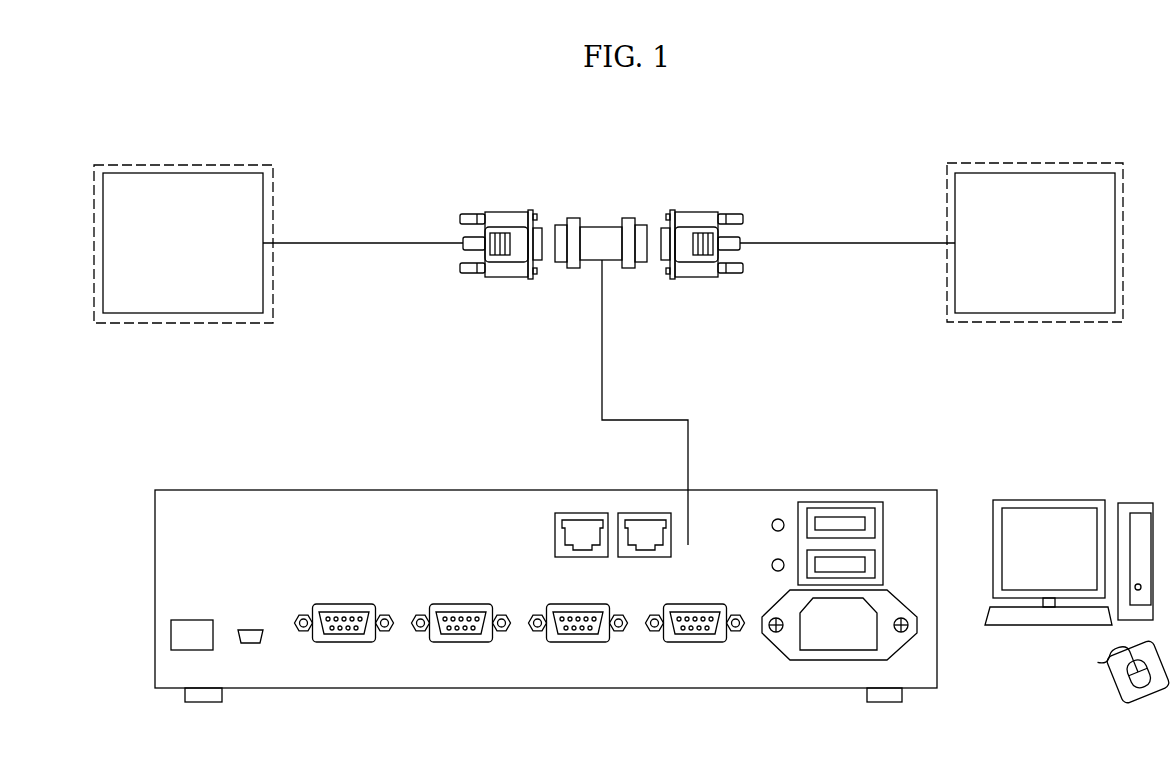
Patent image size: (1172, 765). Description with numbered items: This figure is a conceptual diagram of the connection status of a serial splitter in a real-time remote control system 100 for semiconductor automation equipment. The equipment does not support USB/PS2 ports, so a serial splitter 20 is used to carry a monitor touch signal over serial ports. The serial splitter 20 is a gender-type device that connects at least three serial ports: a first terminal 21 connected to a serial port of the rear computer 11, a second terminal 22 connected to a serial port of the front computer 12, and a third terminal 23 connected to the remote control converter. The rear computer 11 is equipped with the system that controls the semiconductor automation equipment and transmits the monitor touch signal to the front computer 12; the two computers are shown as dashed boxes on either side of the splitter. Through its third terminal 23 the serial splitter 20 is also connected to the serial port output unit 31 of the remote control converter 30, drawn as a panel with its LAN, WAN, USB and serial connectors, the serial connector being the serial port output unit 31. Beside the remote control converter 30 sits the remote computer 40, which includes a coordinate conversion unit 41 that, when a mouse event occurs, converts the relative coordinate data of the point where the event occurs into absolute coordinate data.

The remote control system 100 is at (609, 346).
The rear computer 11 is at (945, 198).
The front computer 12 is at (273, 198).
The serial splitter 20 is at (638, 282).
The first terminal 21 is at (647, 242).
The second terminal 22 is at (560, 240).
The third terminal 23 is at (600, 288).
The remote control converter 30 is at (546, 580).
The serial port output unit 31 is at (688, 644).
The remote computer 40 is at (1030, 500).
The coordinate conversion unit 41 is at (1137, 503).